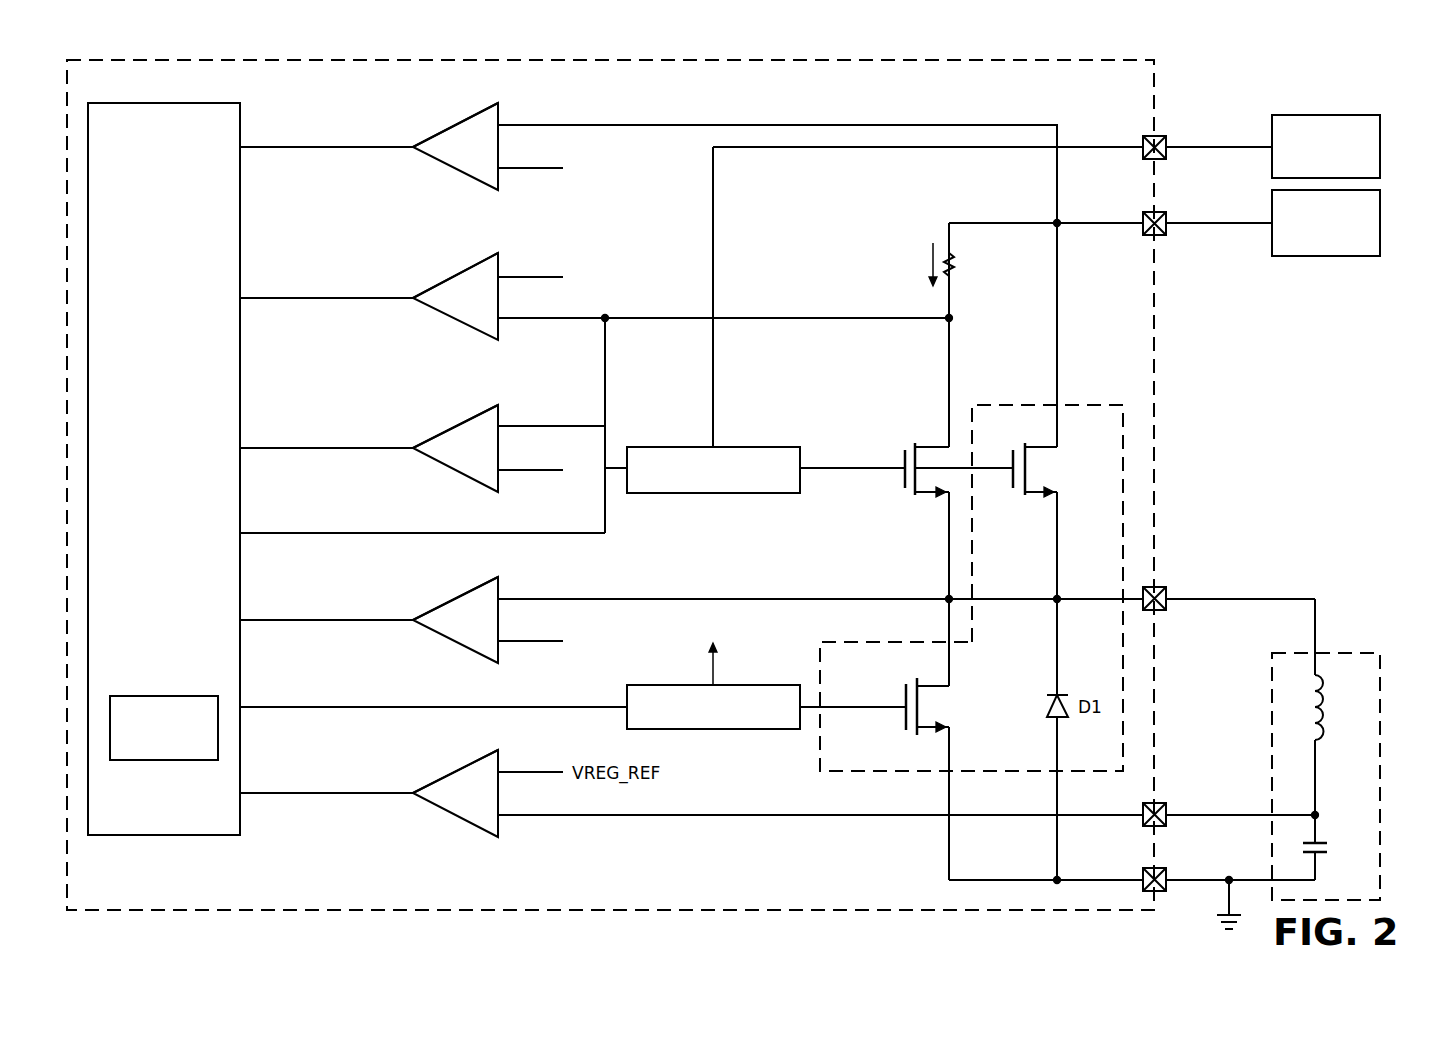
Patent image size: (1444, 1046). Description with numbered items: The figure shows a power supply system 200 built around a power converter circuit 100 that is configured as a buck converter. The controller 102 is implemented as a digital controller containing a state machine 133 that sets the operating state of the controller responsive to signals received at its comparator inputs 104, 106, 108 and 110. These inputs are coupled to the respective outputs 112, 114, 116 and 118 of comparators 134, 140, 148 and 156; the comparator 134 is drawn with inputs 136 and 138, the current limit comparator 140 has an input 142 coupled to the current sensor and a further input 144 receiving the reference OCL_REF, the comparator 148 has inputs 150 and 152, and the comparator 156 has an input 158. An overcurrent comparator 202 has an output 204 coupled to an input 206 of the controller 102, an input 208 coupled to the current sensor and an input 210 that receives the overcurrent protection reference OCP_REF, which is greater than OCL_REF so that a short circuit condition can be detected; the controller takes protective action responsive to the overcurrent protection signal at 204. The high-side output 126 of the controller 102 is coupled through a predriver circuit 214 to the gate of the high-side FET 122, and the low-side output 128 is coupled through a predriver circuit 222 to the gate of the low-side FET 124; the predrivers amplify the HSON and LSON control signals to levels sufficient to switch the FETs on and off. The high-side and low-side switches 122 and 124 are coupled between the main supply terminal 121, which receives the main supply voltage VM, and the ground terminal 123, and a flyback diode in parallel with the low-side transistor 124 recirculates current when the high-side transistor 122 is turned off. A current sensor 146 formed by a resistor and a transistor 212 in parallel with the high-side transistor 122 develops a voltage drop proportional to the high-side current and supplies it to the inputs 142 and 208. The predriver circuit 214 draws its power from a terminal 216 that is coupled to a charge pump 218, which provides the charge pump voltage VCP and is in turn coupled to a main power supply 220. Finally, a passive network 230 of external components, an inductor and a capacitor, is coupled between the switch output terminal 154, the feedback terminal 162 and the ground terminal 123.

The power converter circuit 100 is at (1157, 374).
The power supply system 200 is at (1364, 361).
The controller 102 is at (187, 450).
The state machine 133 is at (162, 762).
The comparator input 104 is at (242, 142).
The comparator output 112 is at (410, 153).
The comparator 134 is at (457, 122).
The VM comparator first input line 136 is at (500, 122).
The VM_REF input 138 is at (500, 172).
The input of the controller 206 is at (242, 293).
The output of overcurrent comparator 204 is at (410, 304).
The overcurrent comparator 202 is at (457, 271).
The input of overcurrent comparator 210 is at (500, 273).
The input of overcurrent comparator 208 is at (500, 322).
The comparator input 106 is at (242, 443).
The comparator output 114 is at (410, 454).
The current limit comparator 140 is at (457, 421).
The input of current limit comparator 142 is at (500, 423).
The OCL_REF input 144 is at (500, 474).
The high-side output 126 is at (242, 540).
The predriver circuit 214 is at (725, 495).
The transistor 212 is at (903, 456).
The high-side switch 122 is at (1008, 483).
The current sensor 146 is at (956, 265).
The comparator input 108 is at (242, 628).
The comparator output 116 is at (410, 626).
The comparator 148 is at (457, 592).
The SWOUT sense line 150 is at (500, 595).
The NEG REF input 152 is at (500, 645).
The low-side output 128 is at (242, 714).
The predriver circuit 222 is at (725, 731).
The low-side switch 124 is at (903, 727).
The comparator input 110 is at (242, 800).
The comparator output 118 is at (410, 799).
The comparator 156 is at (457, 767).
The VREG sense line 158 is at (500, 819).
The terminal 216 is at (1148, 137).
The main supply terminal 121 is at (1148, 212).
The switch output terminal 154 is at (1158, 588).
The feedback terminal 162 is at (1158, 804).
The ground terminal 123 is at (1158, 868).
The charge pump 218 is at (1325, 113).
The main power supply 220 is at (1325, 258).
The passive network 230 is at (1353, 652).